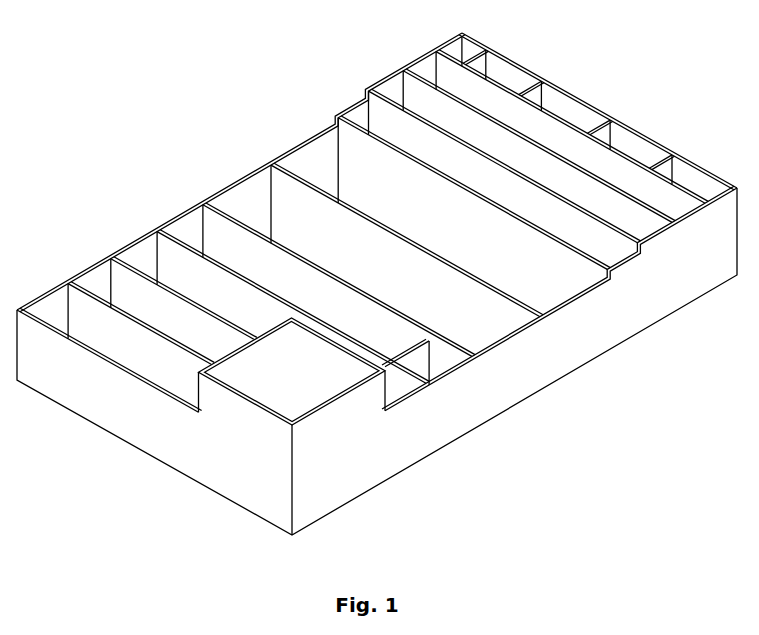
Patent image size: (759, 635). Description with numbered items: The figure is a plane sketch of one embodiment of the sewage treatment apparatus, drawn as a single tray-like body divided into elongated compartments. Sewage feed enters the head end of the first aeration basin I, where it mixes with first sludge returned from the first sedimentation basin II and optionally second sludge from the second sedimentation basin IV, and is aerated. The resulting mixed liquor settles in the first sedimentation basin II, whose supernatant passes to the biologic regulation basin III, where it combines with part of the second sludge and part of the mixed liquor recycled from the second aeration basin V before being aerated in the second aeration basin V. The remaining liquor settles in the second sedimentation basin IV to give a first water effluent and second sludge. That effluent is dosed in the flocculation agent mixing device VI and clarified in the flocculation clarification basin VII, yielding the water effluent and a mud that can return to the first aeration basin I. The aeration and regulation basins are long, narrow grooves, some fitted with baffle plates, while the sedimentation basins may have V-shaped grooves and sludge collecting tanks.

The first aeration basin I is at (698, 182).
The first sedimentation basin II is at (390, 93).
The biologic regulation basin III is at (377, 125).
The second sedimentation basin IV is at (318, 162).
The second aeration basin V is at (192, 235).
The flocculation agent mixing device VI is at (438, 365).
The flocculation clarification basin VII is at (303, 392).